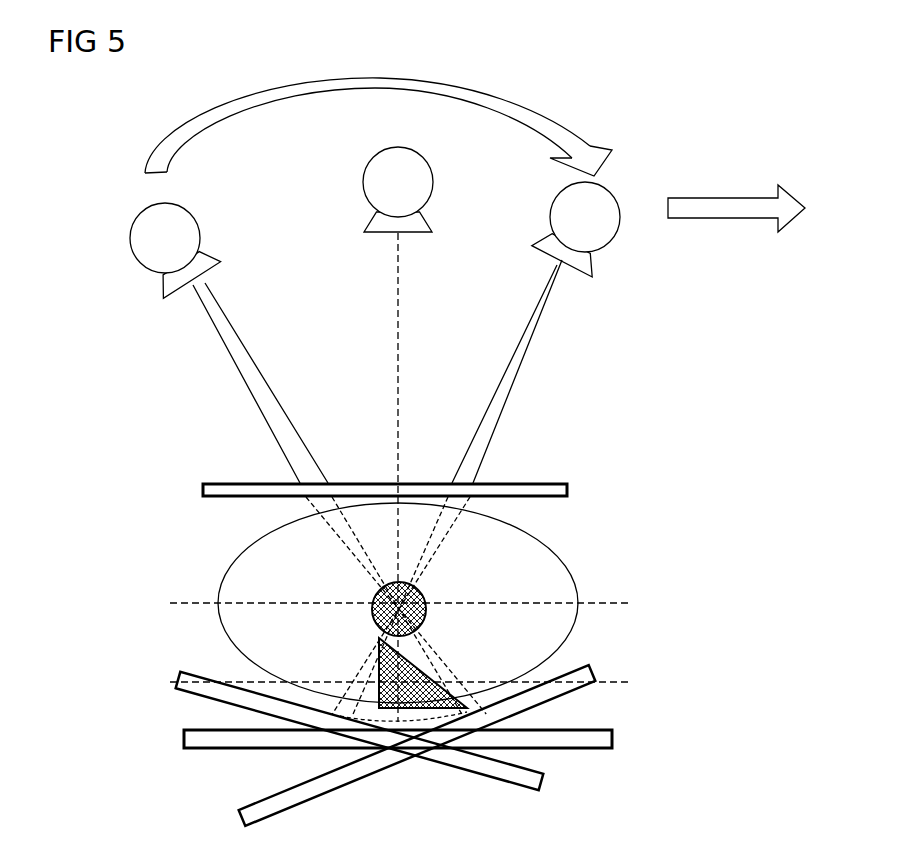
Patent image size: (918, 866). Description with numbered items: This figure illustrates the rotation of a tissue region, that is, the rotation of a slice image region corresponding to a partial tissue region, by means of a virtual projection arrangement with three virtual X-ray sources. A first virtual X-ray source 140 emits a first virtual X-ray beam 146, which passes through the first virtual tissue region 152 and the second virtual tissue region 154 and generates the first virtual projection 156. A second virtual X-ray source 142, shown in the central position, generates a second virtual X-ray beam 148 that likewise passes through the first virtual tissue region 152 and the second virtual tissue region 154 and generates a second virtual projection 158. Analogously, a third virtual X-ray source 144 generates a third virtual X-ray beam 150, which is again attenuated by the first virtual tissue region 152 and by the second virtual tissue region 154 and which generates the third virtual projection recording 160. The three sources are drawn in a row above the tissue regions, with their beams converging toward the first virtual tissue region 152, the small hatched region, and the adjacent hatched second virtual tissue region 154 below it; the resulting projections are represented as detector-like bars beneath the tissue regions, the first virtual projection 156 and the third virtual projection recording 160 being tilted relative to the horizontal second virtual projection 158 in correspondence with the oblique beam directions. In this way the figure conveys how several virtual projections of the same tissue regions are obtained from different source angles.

The first virtual X-ray source 140 is at (138, 259).
The second virtual X-ray source 142 is at (364, 192).
The third virtual X-ray source 144 is at (613, 243).
The first virtual X-ray beam 146 is at (230, 353).
The second virtual X-ray beam 148 is at (396, 293).
The third virtual X-ray beam 150 is at (527, 350).
The first virtual tissue region 152 is at (426, 601).
The second virtual tissue region 154 is at (453, 687).
The first virtual projection 156 is at (594, 668).
The second virtual projection 158 is at (613, 738).
The third virtual projection recording 160 is at (545, 786).